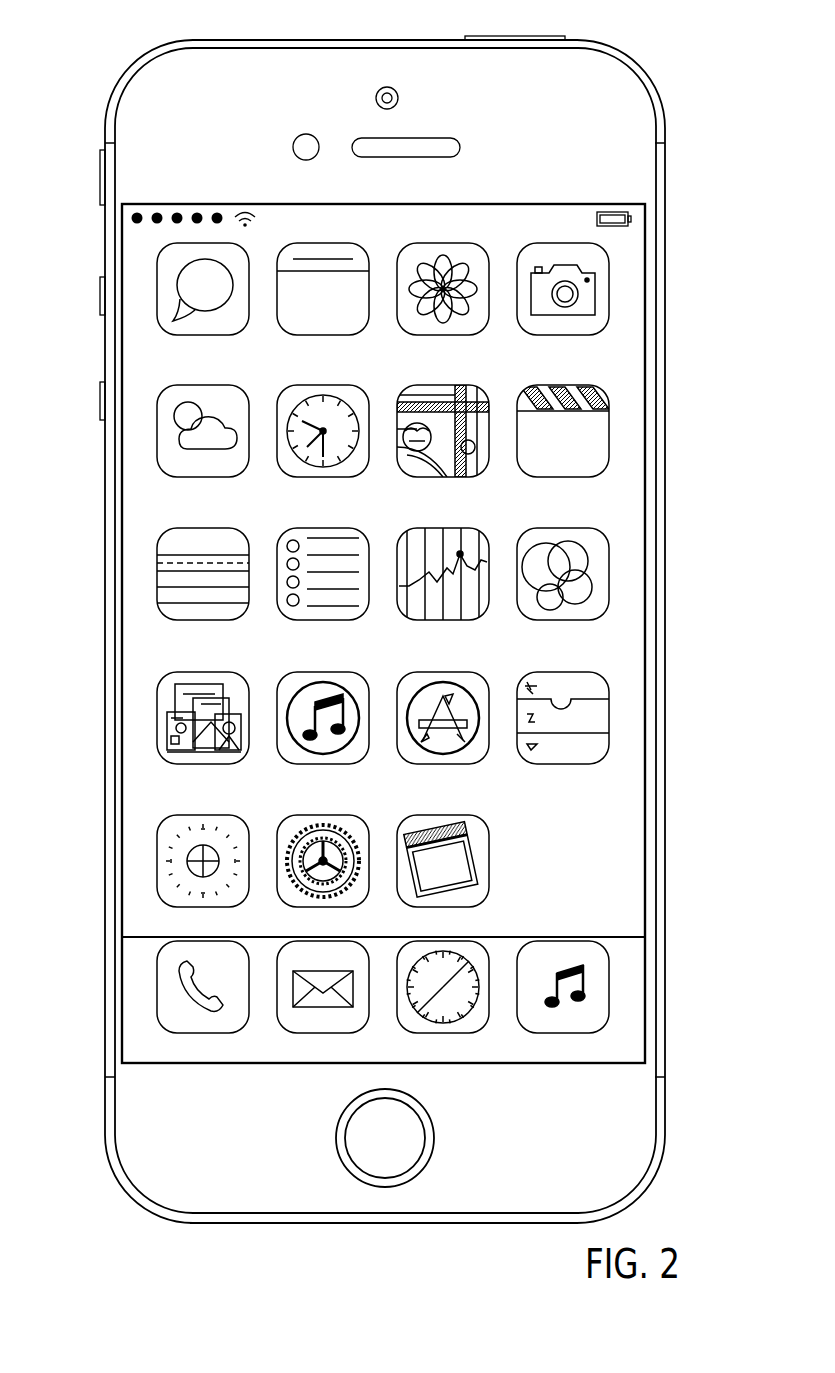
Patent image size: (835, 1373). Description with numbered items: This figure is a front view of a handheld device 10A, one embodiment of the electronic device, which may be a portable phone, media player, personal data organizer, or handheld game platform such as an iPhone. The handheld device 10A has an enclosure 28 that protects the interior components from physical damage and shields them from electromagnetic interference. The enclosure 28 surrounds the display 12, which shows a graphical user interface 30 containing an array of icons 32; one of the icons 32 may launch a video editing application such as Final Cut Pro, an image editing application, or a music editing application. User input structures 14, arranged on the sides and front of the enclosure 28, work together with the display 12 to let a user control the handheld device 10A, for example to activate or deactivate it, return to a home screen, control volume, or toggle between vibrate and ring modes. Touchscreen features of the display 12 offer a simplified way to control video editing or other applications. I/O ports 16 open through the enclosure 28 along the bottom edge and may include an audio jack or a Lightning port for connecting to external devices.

The handheld device 10A is at (108, 21).
The display 12 is at (646, 553).
The user input structures 14 is at (100, 176).
The I/O ports 16 is at (191, 1224).
The enclosure 28 is at (666, 157).
The graphical user interface 30 is at (624, 352).
The icons 32 is at (489, 846).